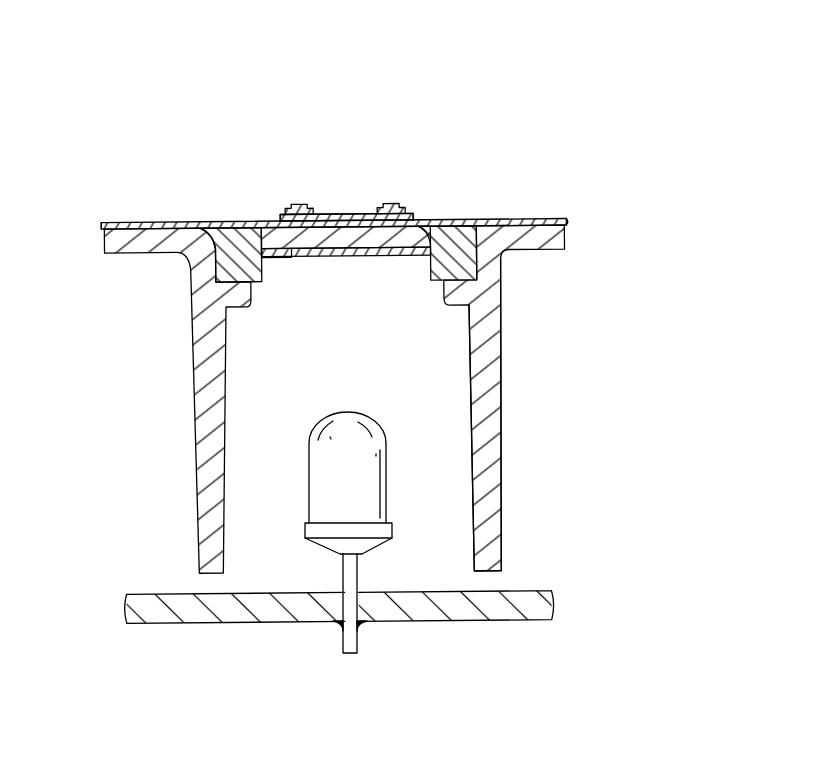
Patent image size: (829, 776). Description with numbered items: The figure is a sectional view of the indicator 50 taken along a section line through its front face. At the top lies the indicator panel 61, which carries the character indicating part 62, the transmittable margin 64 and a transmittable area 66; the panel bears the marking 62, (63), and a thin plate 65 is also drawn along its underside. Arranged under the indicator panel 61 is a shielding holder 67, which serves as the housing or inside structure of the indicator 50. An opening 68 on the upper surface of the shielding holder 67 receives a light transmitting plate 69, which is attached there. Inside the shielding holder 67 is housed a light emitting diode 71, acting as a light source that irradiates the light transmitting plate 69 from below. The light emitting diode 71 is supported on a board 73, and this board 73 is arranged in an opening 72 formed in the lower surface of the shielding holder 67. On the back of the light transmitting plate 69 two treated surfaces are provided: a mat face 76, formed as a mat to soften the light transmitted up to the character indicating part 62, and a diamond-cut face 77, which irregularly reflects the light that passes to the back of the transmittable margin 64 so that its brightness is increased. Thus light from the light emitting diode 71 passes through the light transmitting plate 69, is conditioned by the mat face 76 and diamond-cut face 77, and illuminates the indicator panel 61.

The indicator 50 is at (145, 75).
The indicator panel 61 is at (570, 94).
The character indicating part 62 is at (345, 216).
The light receiving element 63 is at (355, 160).
The transmittable margin 64 is at (402, 206).
The circuit board 65 is at (487, 221).
The transmittable area 66 is at (323, 214).
The shielding holder 67 is at (502, 323).
The opening 68 is at (272, 218).
The light transmitting plate 69 is at (220, 275).
The light emitting diode 71 is at (387, 464).
The opening 72 is at (489, 578).
The board 73 is at (176, 593).
The mat face 76 is at (343, 258).
The diamond-cut face 77 is at (280, 259).